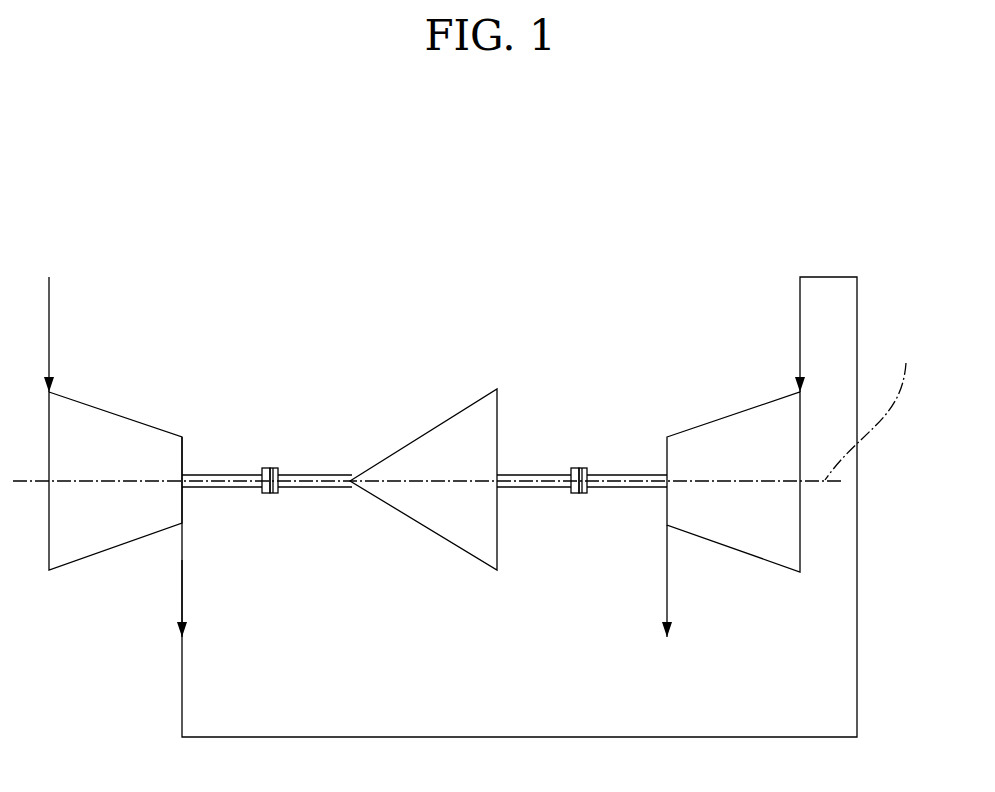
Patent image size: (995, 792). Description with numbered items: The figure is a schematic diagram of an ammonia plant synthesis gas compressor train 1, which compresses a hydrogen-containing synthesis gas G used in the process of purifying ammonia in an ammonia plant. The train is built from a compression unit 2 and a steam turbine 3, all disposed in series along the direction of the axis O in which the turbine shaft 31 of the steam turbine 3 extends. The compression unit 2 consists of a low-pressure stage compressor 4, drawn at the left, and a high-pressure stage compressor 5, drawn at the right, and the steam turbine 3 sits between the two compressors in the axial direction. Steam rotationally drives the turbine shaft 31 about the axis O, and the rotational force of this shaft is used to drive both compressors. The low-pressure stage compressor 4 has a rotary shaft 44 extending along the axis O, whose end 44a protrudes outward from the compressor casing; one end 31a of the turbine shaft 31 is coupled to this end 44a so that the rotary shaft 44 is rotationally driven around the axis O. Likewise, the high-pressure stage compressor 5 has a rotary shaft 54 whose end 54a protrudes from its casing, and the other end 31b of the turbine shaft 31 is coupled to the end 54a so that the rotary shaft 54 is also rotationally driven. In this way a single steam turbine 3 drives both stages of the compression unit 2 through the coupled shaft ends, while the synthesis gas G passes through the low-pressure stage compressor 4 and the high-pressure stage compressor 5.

The ammonia plant synthesis gas compressor train 1 is at (547, 320).
The compression unit 2 is at (424, 412).
The steam turbine 3 is at (455, 416).
The low-pressure stage compressor 4 is at (124, 412).
The high-pressure stage compressor 5 is at (740, 411).
The turbine shaft 31 is at (328, 475).
The one end of turbine shaft 31a is at (275, 494).
The other end of turbine shaft 31b is at (577, 494).
The rotary shaft 44 is at (232, 475).
The end of rotary shaft 44a is at (268, 494).
The rotary shaft 54 is at (625, 475).
The end of rotary shaft 54a is at (584, 494).